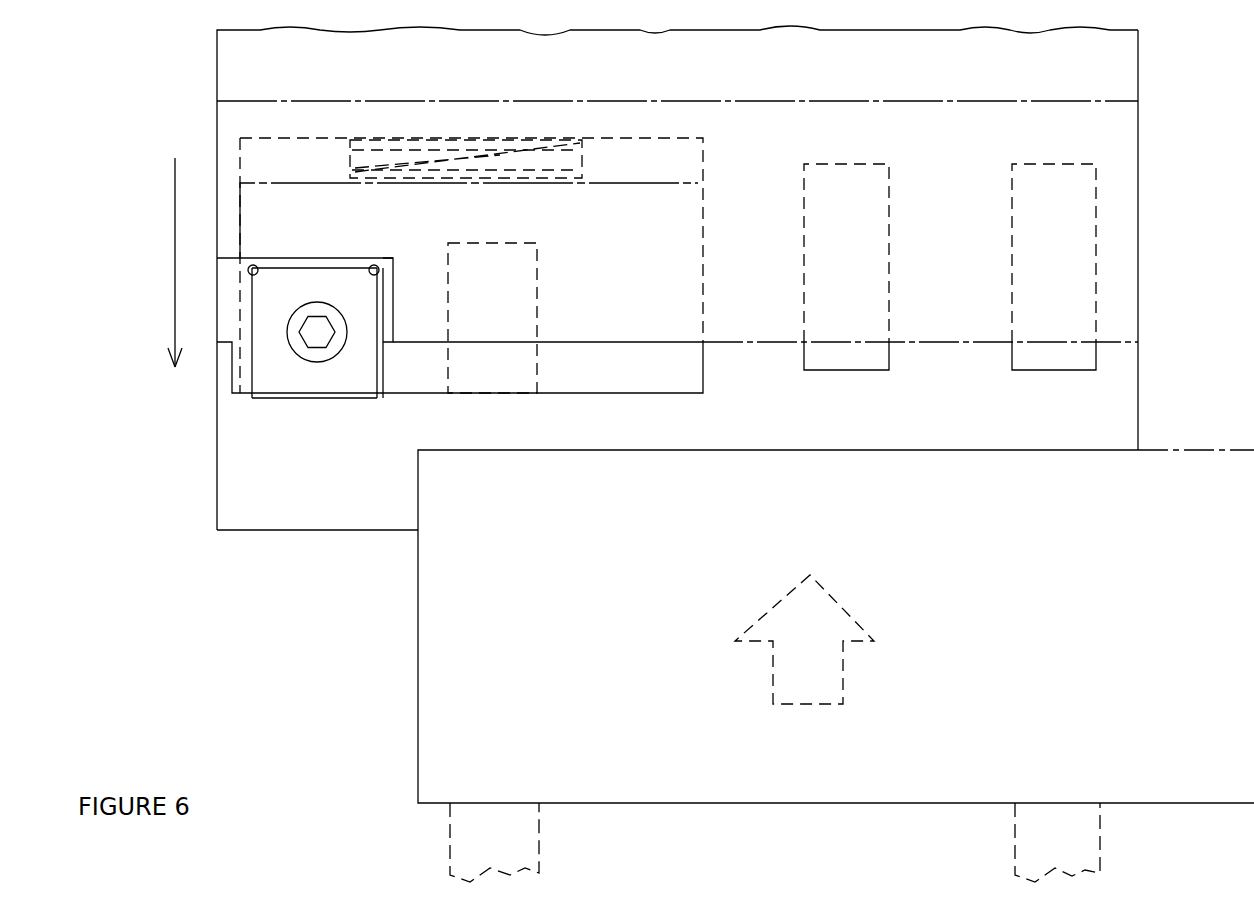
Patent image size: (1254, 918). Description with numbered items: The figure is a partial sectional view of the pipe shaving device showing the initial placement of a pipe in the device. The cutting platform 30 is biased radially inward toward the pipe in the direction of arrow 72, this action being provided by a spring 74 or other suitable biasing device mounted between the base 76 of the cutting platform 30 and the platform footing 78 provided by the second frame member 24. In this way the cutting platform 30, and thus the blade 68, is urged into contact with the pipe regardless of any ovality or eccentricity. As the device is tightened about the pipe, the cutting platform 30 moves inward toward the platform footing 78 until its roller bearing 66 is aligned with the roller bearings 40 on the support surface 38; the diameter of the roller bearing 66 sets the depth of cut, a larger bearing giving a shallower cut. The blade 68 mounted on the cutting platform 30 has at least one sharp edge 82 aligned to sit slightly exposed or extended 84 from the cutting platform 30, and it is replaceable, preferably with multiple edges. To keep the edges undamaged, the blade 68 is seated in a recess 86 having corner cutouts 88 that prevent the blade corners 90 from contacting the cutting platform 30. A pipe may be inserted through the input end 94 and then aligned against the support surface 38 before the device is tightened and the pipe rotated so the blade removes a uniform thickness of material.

The second frame member 24 is at (862, 428).
The cutting platform 30 is at (675, 370).
The support surface 38 is at (948, 345).
The roller bearings 40 is at (1017, 352).
The roller bearing 66 is at (495, 395).
The blade 68 is at (283, 377).
The arrow 72 is at (175, 268).
The spring 74 is at (557, 147).
The base 76 is at (655, 180).
The platform footing 78 is at (668, 142).
The sharp edge 82 is at (351, 400).
The extended 84 is at (385, 398).
The recess 86 is at (385, 303).
The corner cutouts 88 is at (258, 272).
The blade corners 90 is at (368, 275).
The input end 94 is at (1160, 402).